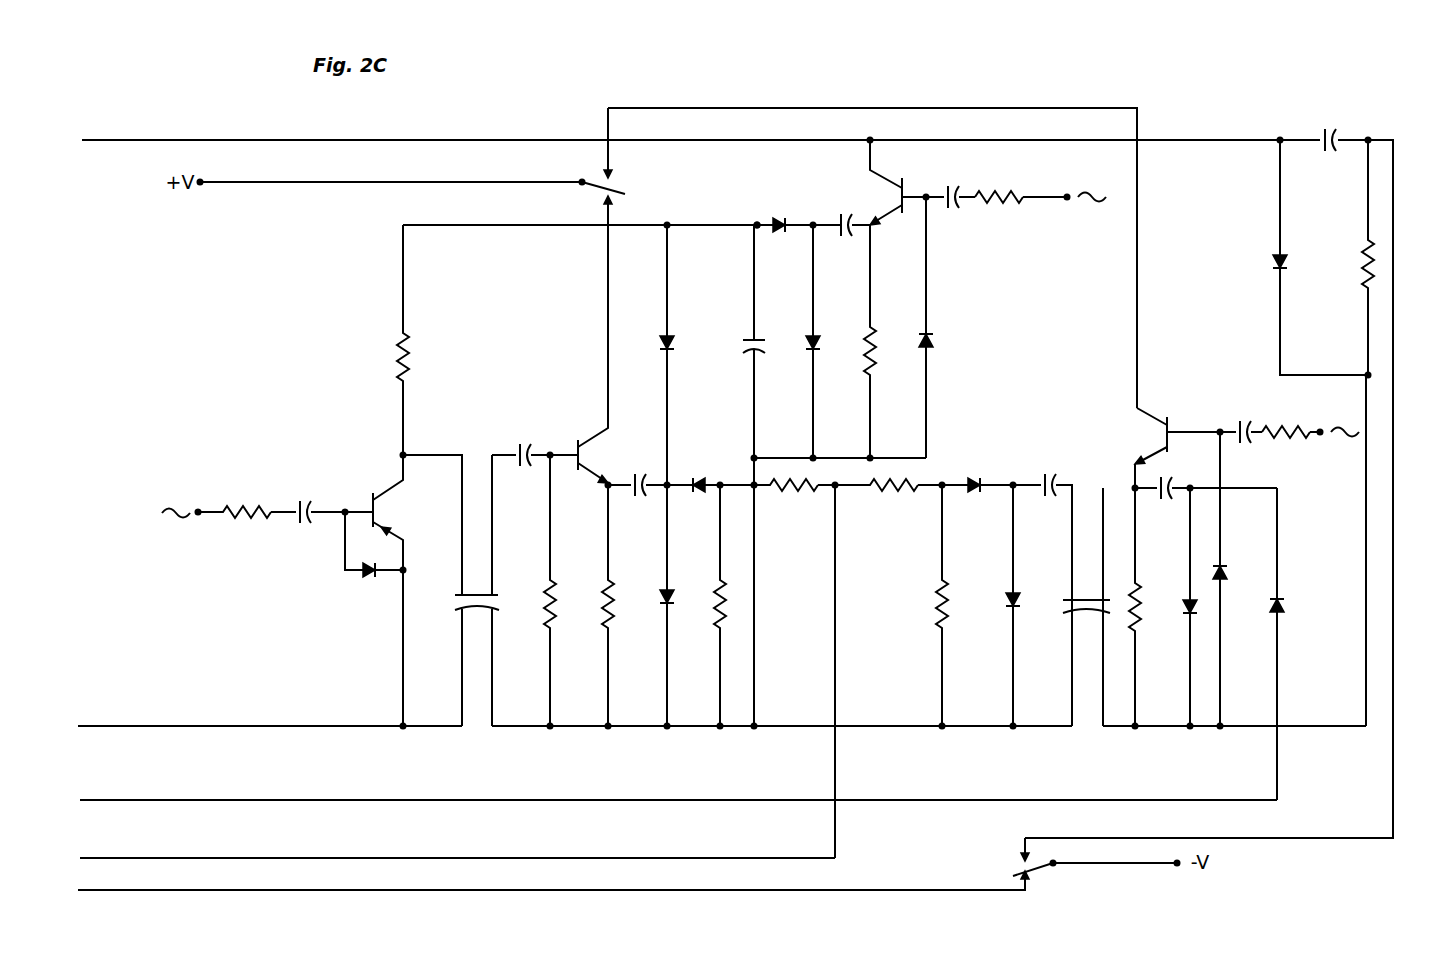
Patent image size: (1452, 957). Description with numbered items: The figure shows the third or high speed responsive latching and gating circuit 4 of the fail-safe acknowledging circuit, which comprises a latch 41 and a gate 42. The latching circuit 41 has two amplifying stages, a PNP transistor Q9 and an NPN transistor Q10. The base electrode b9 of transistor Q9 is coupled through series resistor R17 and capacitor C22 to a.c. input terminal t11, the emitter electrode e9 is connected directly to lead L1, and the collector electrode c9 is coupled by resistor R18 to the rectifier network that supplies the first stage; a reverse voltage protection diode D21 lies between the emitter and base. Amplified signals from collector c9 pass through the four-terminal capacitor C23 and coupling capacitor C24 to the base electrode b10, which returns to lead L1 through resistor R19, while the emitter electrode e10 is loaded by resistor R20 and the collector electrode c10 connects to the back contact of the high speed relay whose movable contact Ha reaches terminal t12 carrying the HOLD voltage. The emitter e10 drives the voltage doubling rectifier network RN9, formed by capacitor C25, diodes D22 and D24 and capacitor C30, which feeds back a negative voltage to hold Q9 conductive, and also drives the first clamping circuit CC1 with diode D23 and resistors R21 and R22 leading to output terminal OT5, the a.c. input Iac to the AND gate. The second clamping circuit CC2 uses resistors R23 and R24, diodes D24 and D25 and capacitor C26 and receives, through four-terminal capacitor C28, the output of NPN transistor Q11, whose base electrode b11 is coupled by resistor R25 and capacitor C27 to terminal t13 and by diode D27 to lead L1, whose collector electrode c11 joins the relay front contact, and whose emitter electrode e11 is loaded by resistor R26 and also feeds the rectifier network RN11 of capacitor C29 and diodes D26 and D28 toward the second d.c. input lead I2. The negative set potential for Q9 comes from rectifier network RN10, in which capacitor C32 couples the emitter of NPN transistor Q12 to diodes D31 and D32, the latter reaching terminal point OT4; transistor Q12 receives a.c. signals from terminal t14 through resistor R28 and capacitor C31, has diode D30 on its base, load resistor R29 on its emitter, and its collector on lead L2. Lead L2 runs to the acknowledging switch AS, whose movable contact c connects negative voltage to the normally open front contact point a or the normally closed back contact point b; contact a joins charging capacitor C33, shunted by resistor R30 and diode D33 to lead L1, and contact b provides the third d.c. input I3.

The lead L2 is at (452, 141).
The latching and gating circuit 4 is at (830, 103).
The terminal t12 is at (201, 184).
The movable contact Ha is at (630, 194).
The terminal point OT4 is at (750, 226).
The diode D32 is at (780, 224).
The capacitor C32 is at (852, 238).
The NPN transistor Q12 is at (862, 205).
The capacitor C31 is at (960, 210).
The resistor R28 is at (1009, 198).
The terminal t14 is at (1064, 207).
The charging capacitor C33 is at (1326, 134).
The diode D33 is at (1272, 260).
The resistor R30 is at (1364, 249).
The voltage doubling rectifier network RN10 is at (762, 328).
The capacitor C30 is at (760, 350).
The diode D31 is at (822, 338).
The load resistor R29 is at (878, 374).
The diode D30 is at (936, 336).
The diode D24 is at (672, 350).
The diode D22 is at (662, 596).
The resistor R18 is at (412, 344).
The latching circuit 41 is at (508, 438).
The coupling capacitor C24 is at (531, 468).
The NPN transistor Q10 is at (592, 466).
The base electrode b10 is at (578, 448).
The collector electrode c10 is at (608, 424).
The emitter electrode e10 is at (602, 482).
The resistor R19 is at (548, 624).
The load resistor R20 is at (610, 624).
The capacitor C25 is at (647, 498).
The voltage doubling rectifier network RN9 is at (686, 464).
The diode D23 is at (705, 494).
The resistor R21 is at (716, 624).
The first clamping circuit CC1 is at (677, 574).
The resistor R22 is at (808, 500).
The output terminal OT5 is at (838, 490).
The a.c. input Iac is at (835, 830).
The resistor R24 is at (904, 484).
The diode D25 is at (969, 478).
The capacitor C26 is at (1057, 498).
The four-terminal capacitor C28 is at (1064, 616).
The gating circuit 42 is at (853, 602).
The second clamping circuit CC2 is at (962, 602).
The resistor R23 is at (936, 624).
The lead L1 is at (514, 734).
The NPN transistor Q11 is at (1116, 442).
The collector electrode c11 is at (1140, 408).
The base electrode b11 is at (1170, 430).
The emitter electrode e11 is at (1146, 452).
The capacitor C27 is at (1252, 445).
The resistor R25 is at (1298, 434).
The input terminal t13 is at (1318, 446).
The capacitor C29 is at (1172, 500).
The voltage rectifier network RN11 is at (1228, 522).
The diode D27 is at (1228, 570).
The load resistor R26 is at (1142, 592).
The diode D26 is at (1188, 618).
The diode D28 is at (1284, 604).
The second d.c. input lead I2 is at (1043, 798).
The third d.c. input I3 is at (705, 889).
The acknowledging switch AS is at (1050, 897).
The front contact point a is at (1021, 856).
The back contact point b is at (1016, 878).
The movable contact c is at (1055, 864).
The terminal t11 is at (199, 512).
The resistor R17 is at (250, 530).
The capacitor C22 is at (312, 525).
The PNP transistor Q9 is at (385, 522).
The base electrode b9 is at (370, 508).
The collector electrode c9 is at (398, 480).
The emitter electrode e9 is at (384, 540).
The diode D21 is at (362, 576).
The four-terminal capacitor C23 is at (456, 612).